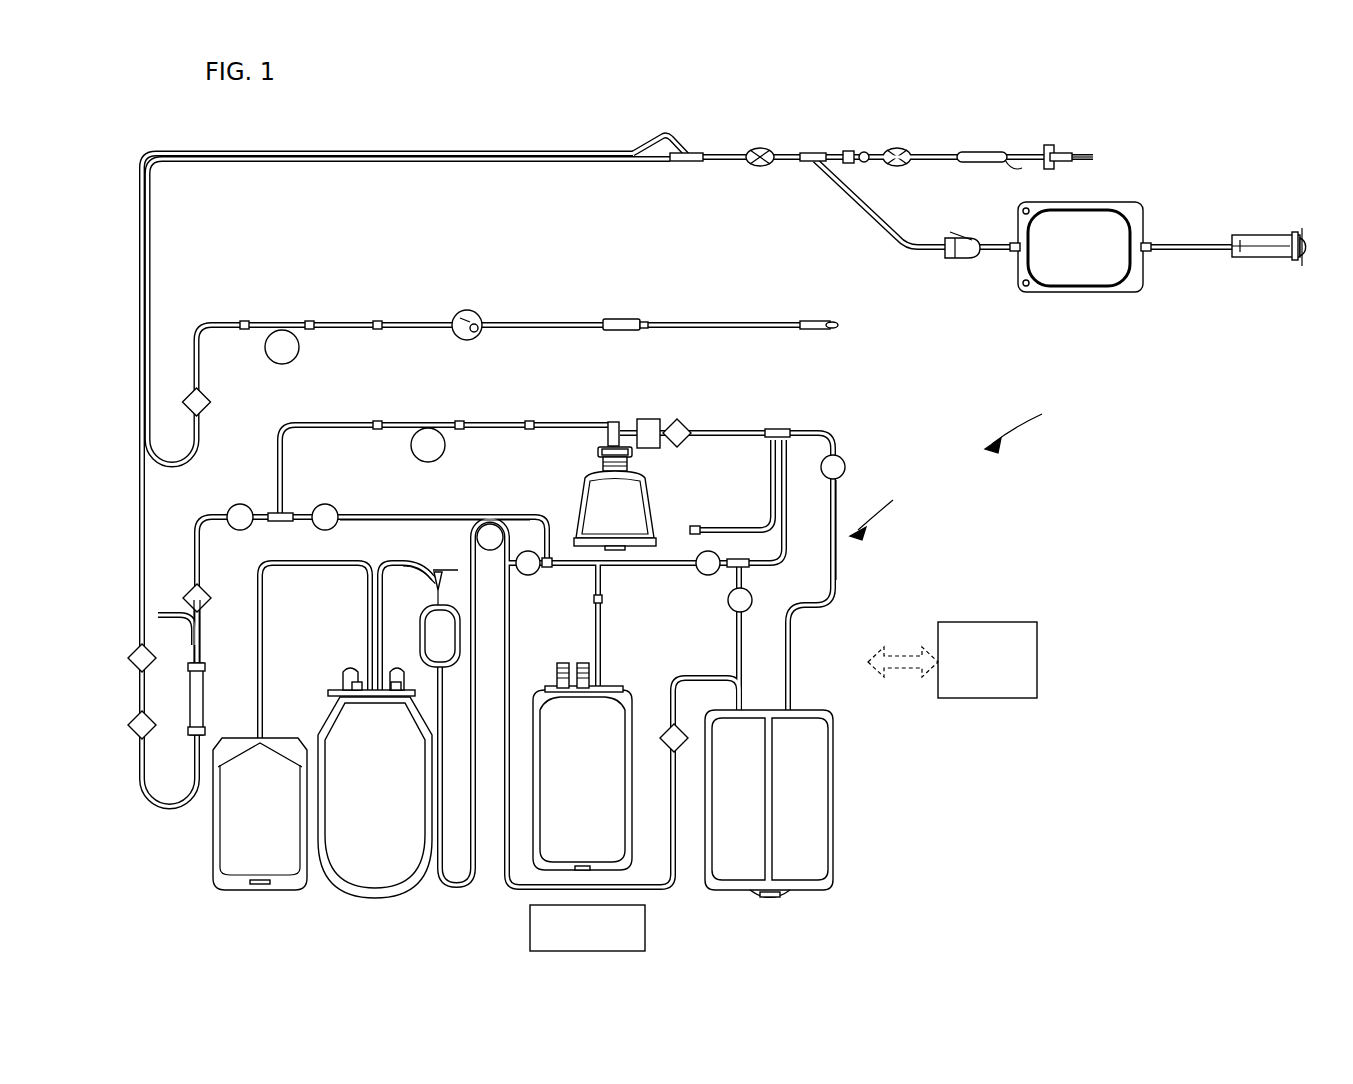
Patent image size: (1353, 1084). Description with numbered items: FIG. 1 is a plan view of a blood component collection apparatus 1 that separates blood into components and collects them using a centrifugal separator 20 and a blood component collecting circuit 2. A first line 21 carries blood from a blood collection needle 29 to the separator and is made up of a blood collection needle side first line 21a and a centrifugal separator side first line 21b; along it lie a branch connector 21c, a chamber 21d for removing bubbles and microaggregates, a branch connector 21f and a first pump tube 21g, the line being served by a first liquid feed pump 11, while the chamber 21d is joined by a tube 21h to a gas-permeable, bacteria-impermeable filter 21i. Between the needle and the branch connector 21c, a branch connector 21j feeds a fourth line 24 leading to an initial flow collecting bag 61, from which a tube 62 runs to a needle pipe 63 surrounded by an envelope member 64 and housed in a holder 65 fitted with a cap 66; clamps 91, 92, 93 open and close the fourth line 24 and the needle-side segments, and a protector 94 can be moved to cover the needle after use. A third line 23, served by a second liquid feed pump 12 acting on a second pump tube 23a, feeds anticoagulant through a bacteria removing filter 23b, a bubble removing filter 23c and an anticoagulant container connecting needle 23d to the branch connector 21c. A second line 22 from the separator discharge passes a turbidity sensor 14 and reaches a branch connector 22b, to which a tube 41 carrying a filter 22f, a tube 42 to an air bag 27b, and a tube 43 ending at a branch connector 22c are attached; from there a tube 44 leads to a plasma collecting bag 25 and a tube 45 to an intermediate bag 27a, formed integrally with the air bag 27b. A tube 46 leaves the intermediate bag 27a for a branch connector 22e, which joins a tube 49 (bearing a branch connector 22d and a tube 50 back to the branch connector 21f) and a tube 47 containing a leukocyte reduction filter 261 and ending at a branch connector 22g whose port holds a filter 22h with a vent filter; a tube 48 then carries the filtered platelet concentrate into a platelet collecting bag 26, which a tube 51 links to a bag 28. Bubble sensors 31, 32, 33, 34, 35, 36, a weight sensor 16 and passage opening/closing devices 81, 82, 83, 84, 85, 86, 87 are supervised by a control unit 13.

The blood component collection apparatus 1 is at (1023, 426).
The blood component collecting circuit 2 is at (883, 513).
The first liquid feed pump 11 is at (445, 450).
The second liquid feed pump 12 is at (290, 348).
The control unit 13 is at (987, 621).
The turbidity sensor 14 is at (647, 418).
The weight sensor 16 is at (646, 927).
The centrifugal separator 20 is at (636, 506).
The first line 21 is at (660, 136).
The blood collection needle side first line 21a is at (640, 150).
The centrifugal separator side first line 21b is at (556, 422).
The branch connector 21c is at (690, 151).
The chamber 21d is at (200, 688).
The branch connector 21f is at (278, 512).
The first pump tube 21g is at (428, 425).
The tube 21h is at (192, 650).
The gas-permeable and bacteria-impermeable filter 21i is at (156, 608).
The branch connector 21j is at (815, 151).
The second line 22 is at (703, 438).
The branch connector 22b is at (790, 432).
The branch connector 22c is at (760, 570).
The branch connector 22d is at (550, 557).
The branch connector 22e is at (595, 600).
The gas-permeable and bacteria-impermeable filter 22f is at (700, 527).
The branch connector 22g is at (432, 586).
The filter 22h is at (412, 564).
The third line 23 is at (657, 165).
The second pump tube 23a is at (288, 322).
The bacteria removing filter 23b is at (470, 316).
The bubble removing filter 23c is at (624, 320).
The anticoagulant container connecting needle 23d is at (836, 322).
The fourth line 24 is at (866, 213).
The plasma collecting bag 25 is at (618, 738).
The platelet collecting bag 26 is at (352, 874).
The leukocyte reduction filter 261 is at (430, 638).
The intermediate bag 27a is at (740, 878).
The air bag 27b is at (815, 878).
The bag 28 is at (235, 878).
The blood collection needle 29 is at (1056, 150).
The bubble sensor 31 is at (212, 396).
The bubble sensor 32 is at (207, 587).
The bubble sensor 33 is at (670, 752).
The bubble sensor 34 is at (680, 418).
The bubble sensor 35 is at (130, 655).
The bubble sensor 36 is at (130, 722).
The tube 41 is at (770, 458).
The tube 42 is at (837, 572).
The tube 43 is at (788, 497).
The tube 44 is at (657, 567).
The tube 45 is at (742, 650).
The tube 46 is at (686, 677).
The tube 47 is at (458, 890).
The tube 48 is at (379, 562).
The tube 49 is at (604, 660).
The tube 50 is at (385, 512).
The tube 51 is at (296, 566).
The initial flow collecting bag 61 is at (1070, 276).
The tube 62 is at (1180, 254).
The needle pipe 63 is at (1240, 234).
The envelope member 64 is at (1252, 258).
The holder 65 is at (1266, 233).
The cap 66 is at (1309, 260).
The passage opening/closing device 81 is at (236, 505).
The passage opening/closing device 82 is at (323, 505).
The passage opening/closing device 83 is at (708, 577).
The passage opening/closing device 84 is at (753, 600).
The passage opening/closing device 85 is at (846, 467).
The passage opening/closing device 86 is at (540, 575).
The passage opening/closing device 87 is at (477, 537).
The clamp 91 is at (962, 260).
The clamp 92 is at (849, 150).
The clamp 93 is at (760, 166).
The protector 94 is at (986, 150).